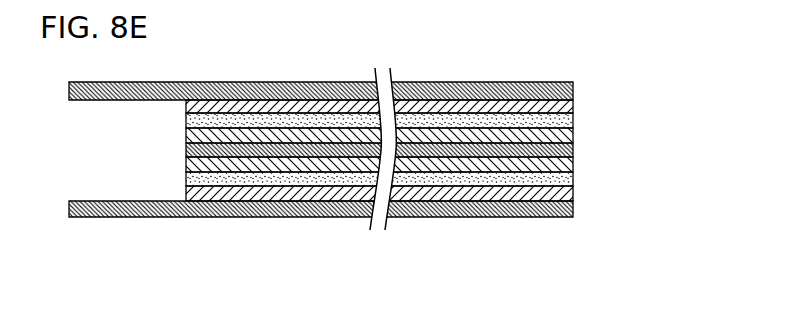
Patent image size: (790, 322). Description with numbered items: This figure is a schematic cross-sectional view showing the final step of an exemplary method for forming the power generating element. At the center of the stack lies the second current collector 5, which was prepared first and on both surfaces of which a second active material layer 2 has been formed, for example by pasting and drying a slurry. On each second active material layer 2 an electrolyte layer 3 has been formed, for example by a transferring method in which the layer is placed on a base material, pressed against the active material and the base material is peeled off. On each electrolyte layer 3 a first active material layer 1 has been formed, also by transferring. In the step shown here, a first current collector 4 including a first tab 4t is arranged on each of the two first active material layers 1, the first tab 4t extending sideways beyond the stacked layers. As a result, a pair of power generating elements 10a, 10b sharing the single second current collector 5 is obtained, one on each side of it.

The first current collector 4 is at (573, 91).
The first tab 4t is at (132, 100).
The first active material layer 1 is at (573, 106).
The electrolyte layer 3 is at (573, 119).
The second active material layer 2 is at (573, 135).
The second current collector 5 is at (573, 150).
The power generating element 10a is at (647, 85).
The power generating element 10b is at (647, 150).